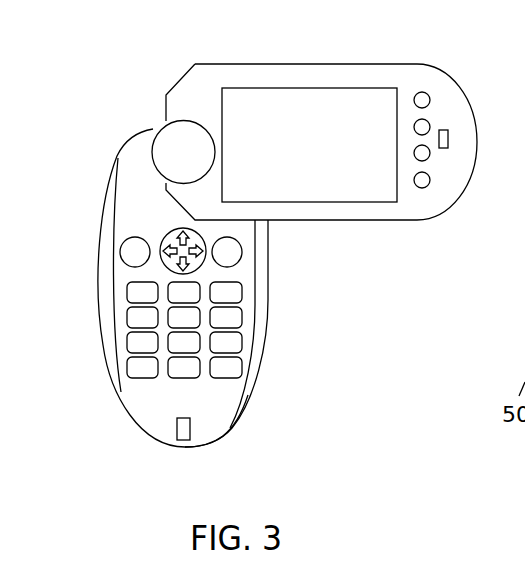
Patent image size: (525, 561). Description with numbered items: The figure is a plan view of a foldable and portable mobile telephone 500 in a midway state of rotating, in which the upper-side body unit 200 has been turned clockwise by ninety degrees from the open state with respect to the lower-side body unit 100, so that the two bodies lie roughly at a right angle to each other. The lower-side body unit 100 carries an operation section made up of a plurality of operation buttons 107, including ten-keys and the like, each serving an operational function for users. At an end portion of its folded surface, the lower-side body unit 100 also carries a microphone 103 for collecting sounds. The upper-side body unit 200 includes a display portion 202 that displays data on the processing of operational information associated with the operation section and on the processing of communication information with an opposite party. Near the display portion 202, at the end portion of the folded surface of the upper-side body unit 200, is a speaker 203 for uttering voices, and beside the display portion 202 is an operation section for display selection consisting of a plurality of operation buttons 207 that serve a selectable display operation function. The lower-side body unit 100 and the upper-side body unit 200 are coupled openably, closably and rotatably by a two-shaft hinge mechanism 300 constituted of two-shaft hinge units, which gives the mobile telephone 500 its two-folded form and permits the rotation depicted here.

The lower-side body unit 100 is at (118, 278).
The microphone 103 is at (190, 427).
The operation buttons 107 is at (242, 290).
The upper-side body unit 200 is at (329, 78).
The display portion 202 is at (370, 192).
The speaker 203 is at (445, 130).
The operation buttons 207 is at (428, 188).
The two-shaft hinge mechanism 300 is at (147, 123).
The mobile telephone 500 is at (93, 380).